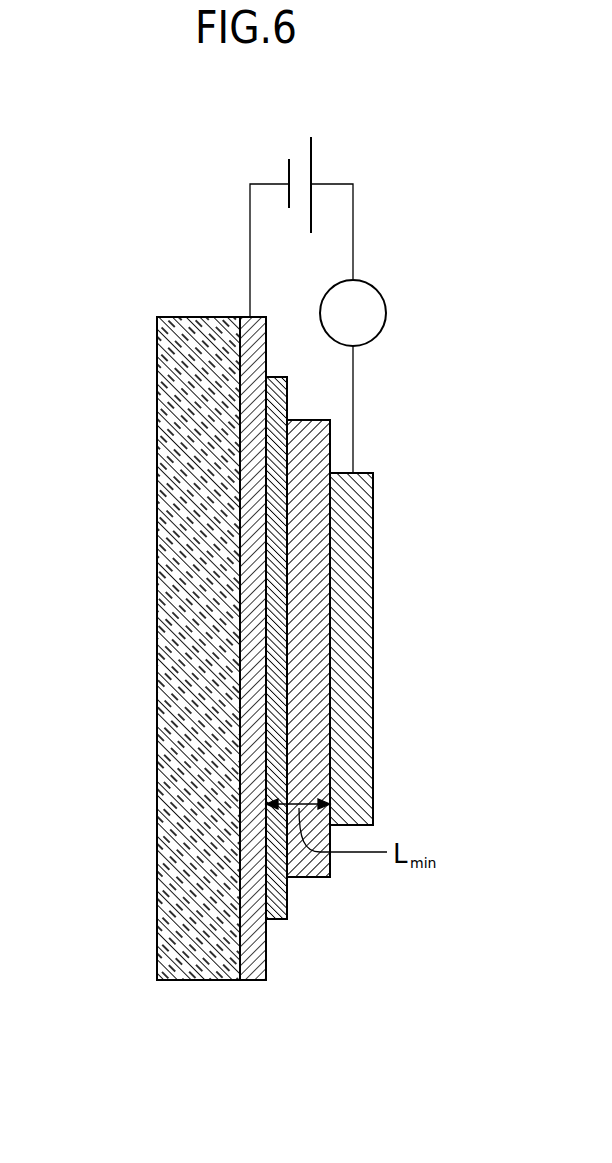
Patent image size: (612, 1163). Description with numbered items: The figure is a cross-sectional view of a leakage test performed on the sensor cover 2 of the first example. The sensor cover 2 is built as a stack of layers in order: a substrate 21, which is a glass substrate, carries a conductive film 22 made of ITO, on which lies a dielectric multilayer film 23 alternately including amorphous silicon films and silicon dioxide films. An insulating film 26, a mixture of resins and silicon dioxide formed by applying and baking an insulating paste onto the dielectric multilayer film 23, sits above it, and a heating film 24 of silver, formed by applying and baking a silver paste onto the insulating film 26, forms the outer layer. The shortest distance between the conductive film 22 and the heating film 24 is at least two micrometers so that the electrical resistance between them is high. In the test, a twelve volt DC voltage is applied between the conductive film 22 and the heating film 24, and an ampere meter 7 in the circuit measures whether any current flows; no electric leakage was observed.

The sensor cover 2 is at (60, 247).
The substrate 21 is at (202, 512).
The conductive film 22 is at (250, 567).
The dielectric multilayer film 23 is at (273, 626).
The insulating film 26 is at (310, 693).
The heating film 24 is at (353, 752).
The ampere meter 7 is at (386, 311).